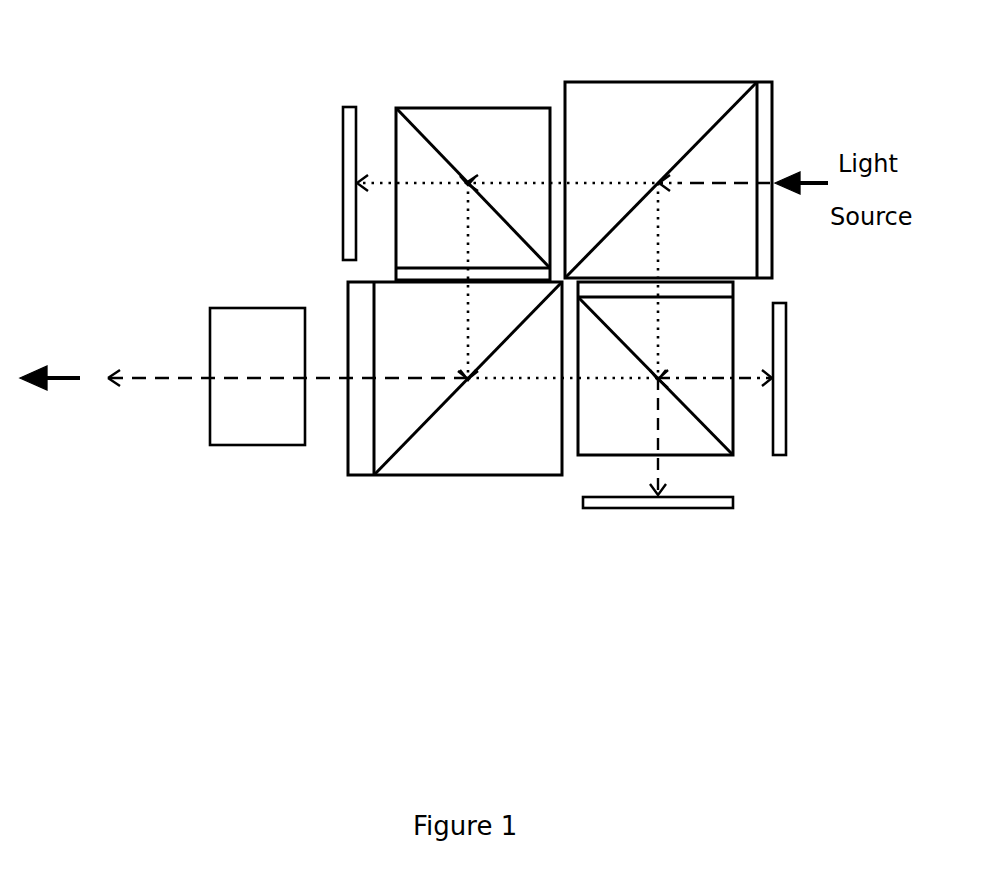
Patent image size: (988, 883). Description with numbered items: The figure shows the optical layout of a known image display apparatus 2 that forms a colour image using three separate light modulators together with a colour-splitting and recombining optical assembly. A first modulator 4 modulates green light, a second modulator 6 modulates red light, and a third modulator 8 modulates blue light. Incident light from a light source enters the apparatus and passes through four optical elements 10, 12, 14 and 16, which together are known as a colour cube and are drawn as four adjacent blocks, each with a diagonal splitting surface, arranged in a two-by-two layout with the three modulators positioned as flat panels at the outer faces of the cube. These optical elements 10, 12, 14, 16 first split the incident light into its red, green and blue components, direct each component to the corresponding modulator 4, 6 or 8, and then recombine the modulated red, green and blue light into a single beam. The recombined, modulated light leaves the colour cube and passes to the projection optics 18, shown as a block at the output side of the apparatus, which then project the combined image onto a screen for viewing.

The image display apparatus 2 is at (183, 127).
The first modulator 4 is at (343, 146).
The second modulator 6 is at (603, 510).
The third modulator 8 is at (787, 428).
The optical element 10 is at (740, 93).
The optical element 12 is at (718, 453).
The optical element 14 is at (413, 127).
The optical element 16 is at (407, 443).
The projection optics 18 is at (235, 445).